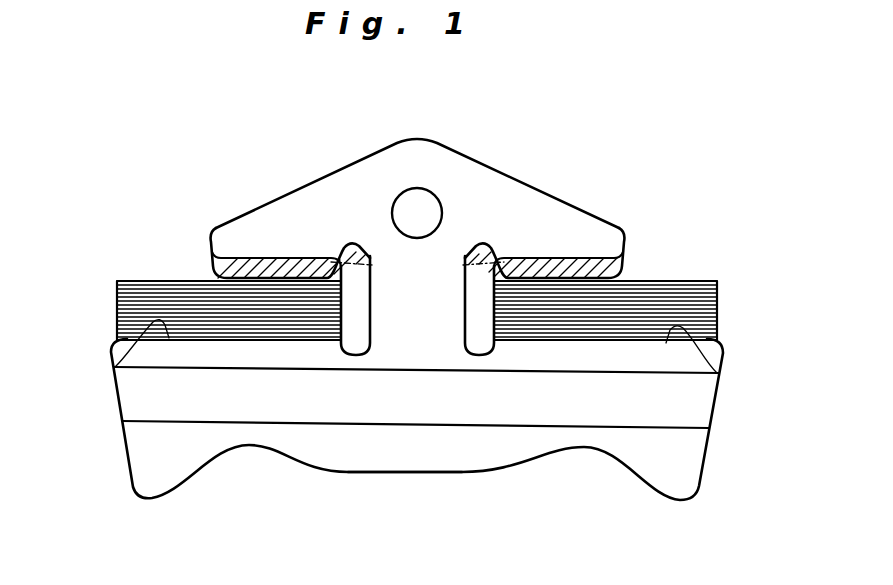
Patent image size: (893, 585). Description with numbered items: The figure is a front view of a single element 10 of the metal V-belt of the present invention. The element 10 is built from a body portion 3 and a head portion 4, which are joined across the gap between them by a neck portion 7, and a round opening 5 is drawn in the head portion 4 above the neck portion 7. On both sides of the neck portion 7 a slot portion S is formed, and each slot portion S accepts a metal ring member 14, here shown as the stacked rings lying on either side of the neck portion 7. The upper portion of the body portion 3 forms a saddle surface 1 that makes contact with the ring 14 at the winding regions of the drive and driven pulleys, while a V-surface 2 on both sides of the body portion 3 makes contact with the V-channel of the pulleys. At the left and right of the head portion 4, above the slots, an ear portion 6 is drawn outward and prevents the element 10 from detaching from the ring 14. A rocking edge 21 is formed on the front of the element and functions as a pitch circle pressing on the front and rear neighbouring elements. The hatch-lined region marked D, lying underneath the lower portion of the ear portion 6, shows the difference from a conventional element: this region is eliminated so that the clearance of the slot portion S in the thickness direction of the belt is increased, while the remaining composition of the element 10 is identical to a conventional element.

The saddle surface 1 is at (115, 367).
The V-surface 2 is at (119, 422).
The body portion 3 is at (468, 452).
The head portion 4 is at (457, 184).
The hole 5 is at (407, 193).
The ear portion 6 is at (257, 233).
The neck portion 7 is at (397, 298).
The element 10 is at (444, 131).
The metal ring member 14 is at (150, 282).
The rocking edge 21 is at (667, 376).
The slot portion S is at (107, 290).
The hatched region D is at (203, 263).